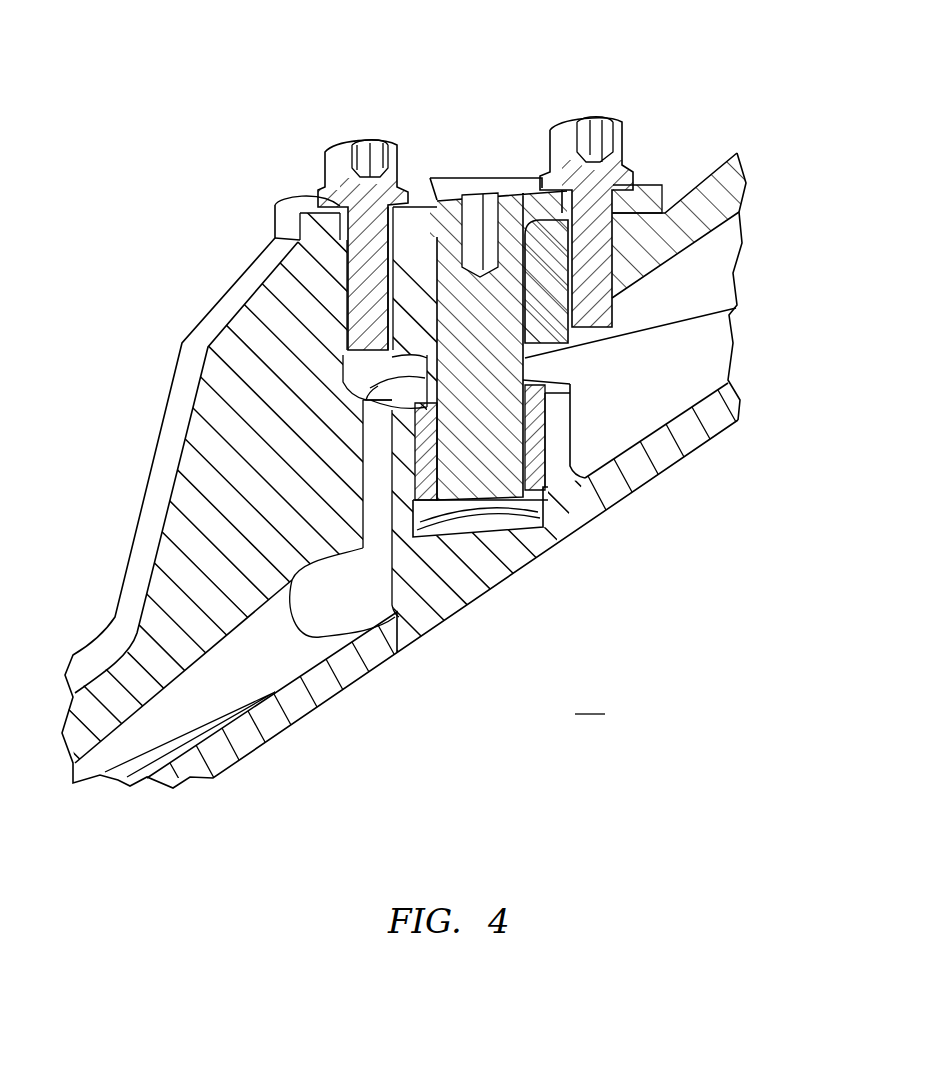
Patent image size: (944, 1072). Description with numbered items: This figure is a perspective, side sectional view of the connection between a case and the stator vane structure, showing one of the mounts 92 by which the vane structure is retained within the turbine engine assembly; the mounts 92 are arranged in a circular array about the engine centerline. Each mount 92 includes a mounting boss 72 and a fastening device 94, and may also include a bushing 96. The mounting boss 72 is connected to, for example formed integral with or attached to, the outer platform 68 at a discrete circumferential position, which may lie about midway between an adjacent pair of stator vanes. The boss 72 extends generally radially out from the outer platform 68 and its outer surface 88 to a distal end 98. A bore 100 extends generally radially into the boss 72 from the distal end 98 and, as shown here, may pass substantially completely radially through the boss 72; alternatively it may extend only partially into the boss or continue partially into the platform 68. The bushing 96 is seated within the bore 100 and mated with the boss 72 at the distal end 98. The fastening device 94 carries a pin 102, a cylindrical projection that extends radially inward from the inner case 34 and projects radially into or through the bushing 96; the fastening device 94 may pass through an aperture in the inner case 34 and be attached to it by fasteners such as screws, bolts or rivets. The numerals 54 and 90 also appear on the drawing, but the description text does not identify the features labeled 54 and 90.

The inner case 34 is at (748, 182).
The nozzle vane body 54 is at (472, 536).
The outer platform 68 is at (750, 405).
The mounting boss 72 is at (583, 420).
The outer surface 88 is at (153, 753).
The wall 90 is at (232, 765).
The mount 92 is at (613, 88).
The fastening device 94 is at (433, 188).
The bushing 96 is at (540, 372).
The distal end 98 is at (560, 392).
The bore 100 is at (530, 516).
The pin 102 is at (463, 490).